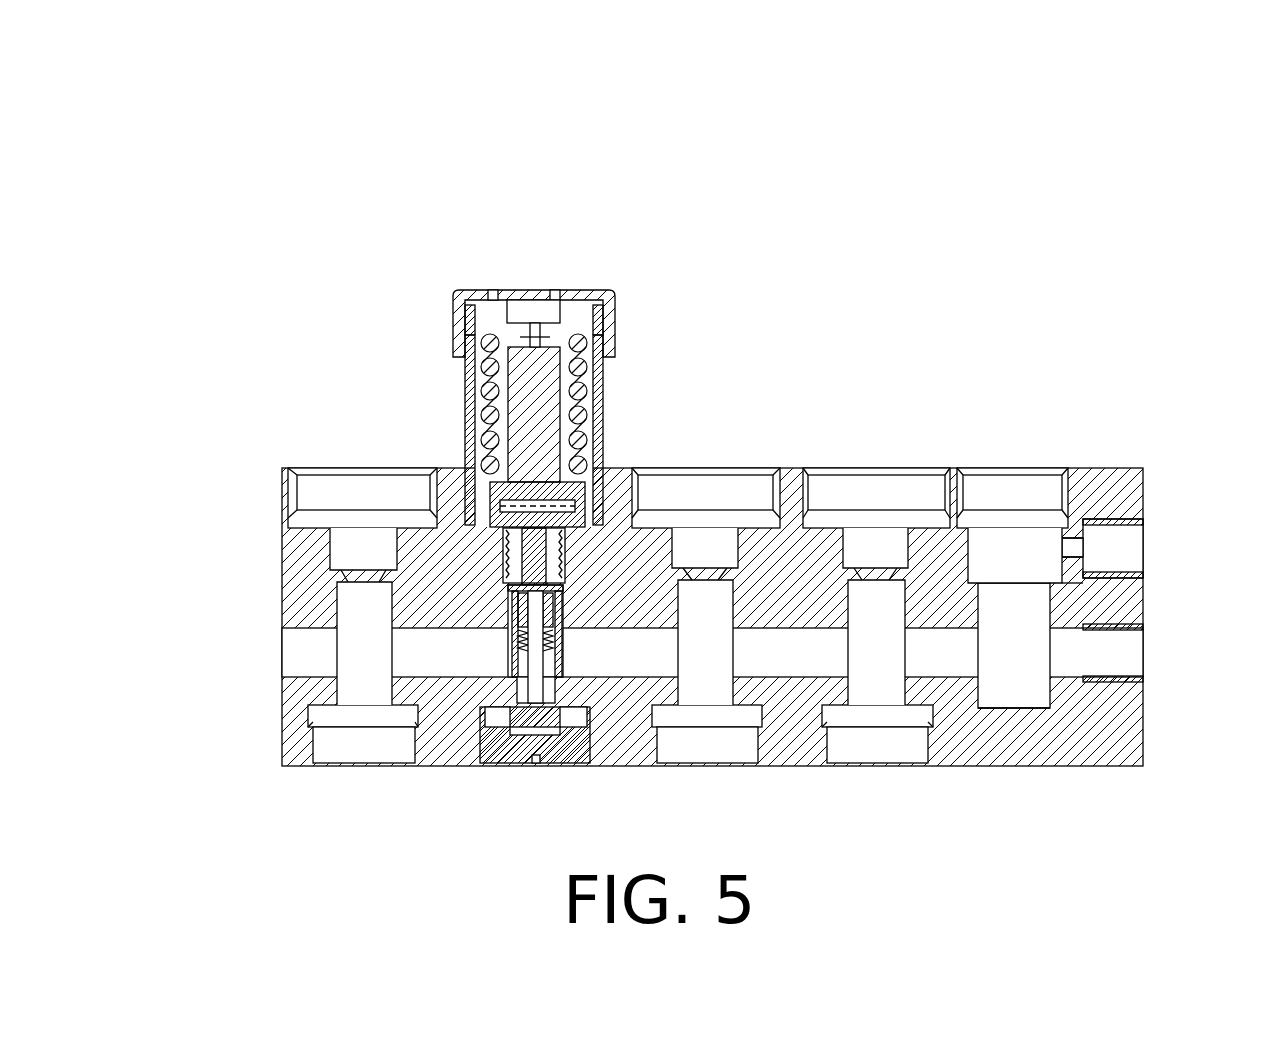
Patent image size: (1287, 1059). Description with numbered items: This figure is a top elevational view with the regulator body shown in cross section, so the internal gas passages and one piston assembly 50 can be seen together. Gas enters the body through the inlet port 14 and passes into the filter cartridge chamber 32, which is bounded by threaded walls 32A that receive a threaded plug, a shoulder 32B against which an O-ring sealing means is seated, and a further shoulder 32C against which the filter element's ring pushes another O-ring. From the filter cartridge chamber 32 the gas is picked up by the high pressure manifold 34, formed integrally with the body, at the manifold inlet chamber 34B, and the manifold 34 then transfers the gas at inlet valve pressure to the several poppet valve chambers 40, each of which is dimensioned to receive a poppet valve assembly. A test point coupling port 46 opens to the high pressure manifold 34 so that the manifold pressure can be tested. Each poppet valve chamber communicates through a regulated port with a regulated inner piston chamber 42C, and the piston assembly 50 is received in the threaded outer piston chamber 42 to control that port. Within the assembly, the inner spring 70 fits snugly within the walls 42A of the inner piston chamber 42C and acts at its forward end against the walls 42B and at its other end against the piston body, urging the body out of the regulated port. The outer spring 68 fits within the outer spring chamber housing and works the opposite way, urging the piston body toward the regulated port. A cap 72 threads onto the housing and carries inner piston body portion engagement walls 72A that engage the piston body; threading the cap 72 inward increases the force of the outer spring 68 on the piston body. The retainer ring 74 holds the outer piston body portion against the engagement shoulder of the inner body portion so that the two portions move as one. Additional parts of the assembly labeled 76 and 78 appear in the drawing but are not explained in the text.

The inlet port 14 is at (1123, 552).
The filter cartridge chamber 32 is at (1030, 500).
The threaded walls of filter cartridge chamber 32A is at (1028, 567).
The shoulder of filter cartridge chamber 32B is at (968, 490).
The shoulder of filter cartridge chamber 32C is at (1060, 585).
The high pressure manifold 34 is at (948, 648).
The manifold inlet chamber 34B is at (1017, 695).
The poppet valve chamber 40 is at (883, 603).
The outer piston chamber 42 is at (927, 493).
The walls of inner piston chamber 42A is at (437, 512).
The walls of inner piston chamber 42B is at (353, 547).
The regulated inner piston chamber 42C is at (500, 603).
The test point coupling port 46 is at (1107, 647).
The piston assembly 50 is at (584, 407).
The outer spring 68 is at (610, 356).
The spring 70 is at (650, 525).
The cap 72 is at (563, 283).
The inner piston body portion engagement walls 72A is at (555, 290).
The retainer ring 74 is at (478, 488).
The piston 76 is at (572, 493).
The seal assembly 78 is at (615, 540).